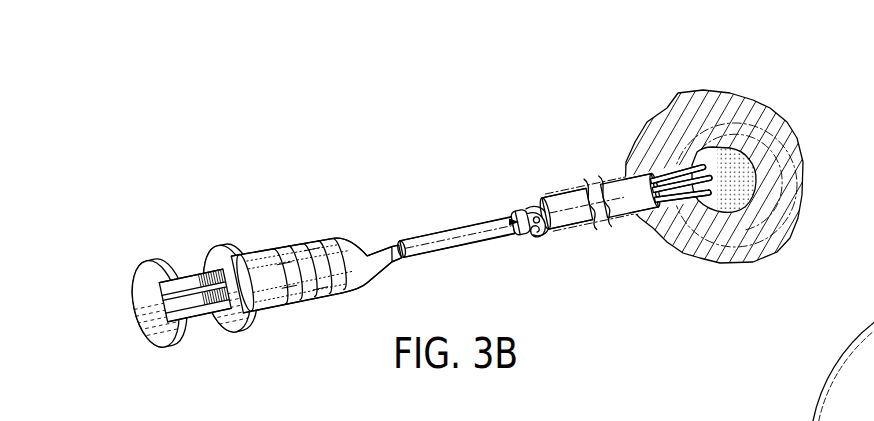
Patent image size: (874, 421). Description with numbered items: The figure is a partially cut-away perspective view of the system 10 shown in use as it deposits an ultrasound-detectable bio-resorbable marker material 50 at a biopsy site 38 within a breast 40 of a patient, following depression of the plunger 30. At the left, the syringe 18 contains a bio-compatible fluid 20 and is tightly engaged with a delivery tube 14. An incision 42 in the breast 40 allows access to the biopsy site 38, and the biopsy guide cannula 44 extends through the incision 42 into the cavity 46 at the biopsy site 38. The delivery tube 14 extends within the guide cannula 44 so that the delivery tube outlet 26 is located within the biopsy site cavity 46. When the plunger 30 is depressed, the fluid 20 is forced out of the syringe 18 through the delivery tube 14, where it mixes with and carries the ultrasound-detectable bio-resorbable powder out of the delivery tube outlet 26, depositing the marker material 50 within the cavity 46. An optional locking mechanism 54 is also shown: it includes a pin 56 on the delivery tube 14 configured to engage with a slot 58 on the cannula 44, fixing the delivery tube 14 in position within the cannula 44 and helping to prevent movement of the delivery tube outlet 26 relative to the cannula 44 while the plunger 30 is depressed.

The system 10 is at (368, 190).
The delivery tube 14 is at (459, 251).
The syringe 18 is at (263, 251).
The fluid 20 is at (326, 291).
The delivery tube outlet 26 is at (713, 170).
The plunger 30 is at (150, 262).
The biopsy site 38 is at (800, 136).
The breast 40 is at (792, 420).
The incision 42 is at (596, 185).
The biopsy guide cannula 44 is at (541, 239).
The cavity 46 is at (705, 158).
The ultrasound-detectable bio-resorbable marker material 50 is at (753, 188).
The locking mechanism 54 is at (510, 222).
The pin 56 is at (553, 217).
The slot 58 is at (531, 206).